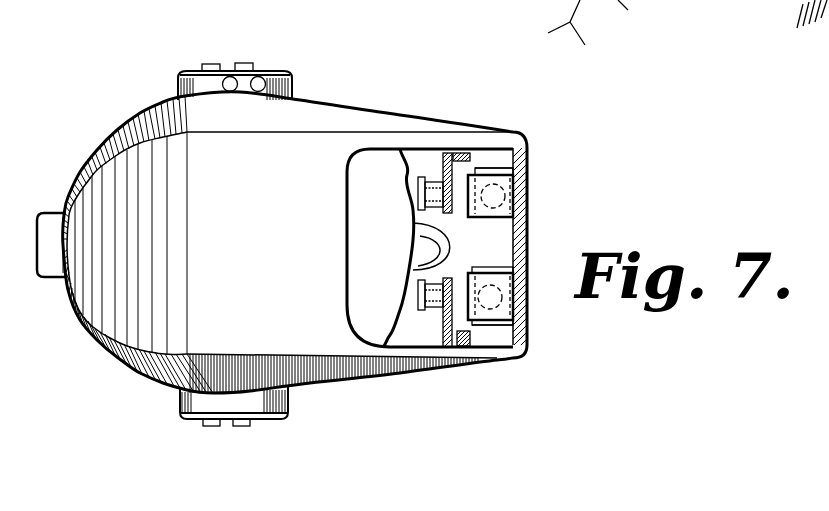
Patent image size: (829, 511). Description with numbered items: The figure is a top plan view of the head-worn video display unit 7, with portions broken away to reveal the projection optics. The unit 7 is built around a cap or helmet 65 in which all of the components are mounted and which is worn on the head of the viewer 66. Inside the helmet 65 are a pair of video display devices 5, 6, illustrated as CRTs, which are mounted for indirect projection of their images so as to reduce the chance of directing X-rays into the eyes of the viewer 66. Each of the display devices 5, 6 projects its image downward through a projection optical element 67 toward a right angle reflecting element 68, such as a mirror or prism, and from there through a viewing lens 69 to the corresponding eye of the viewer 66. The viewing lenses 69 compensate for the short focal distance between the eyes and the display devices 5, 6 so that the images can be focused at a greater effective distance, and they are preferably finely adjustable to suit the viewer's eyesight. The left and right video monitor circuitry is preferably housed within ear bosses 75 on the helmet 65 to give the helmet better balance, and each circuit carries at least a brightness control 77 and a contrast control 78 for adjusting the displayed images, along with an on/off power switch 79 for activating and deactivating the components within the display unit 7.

The video display unit 7 is at (103, 132).
The video display device 5 is at (505, 178).
The video display device 6 is at (508, 325).
The helmet 65 is at (325, 108).
The viewer 66 is at (358, 259).
The projection optical element 67 is at (500, 195).
The right angle reflecting element 68 is at (506, 168).
The viewing lens 69 is at (423, 192).
The ear boss 75 is at (291, 78).
The brightness control 77 is at (205, 64).
The contrast control 78 is at (245, 63).
The on/off power switch 79 is at (262, 78).